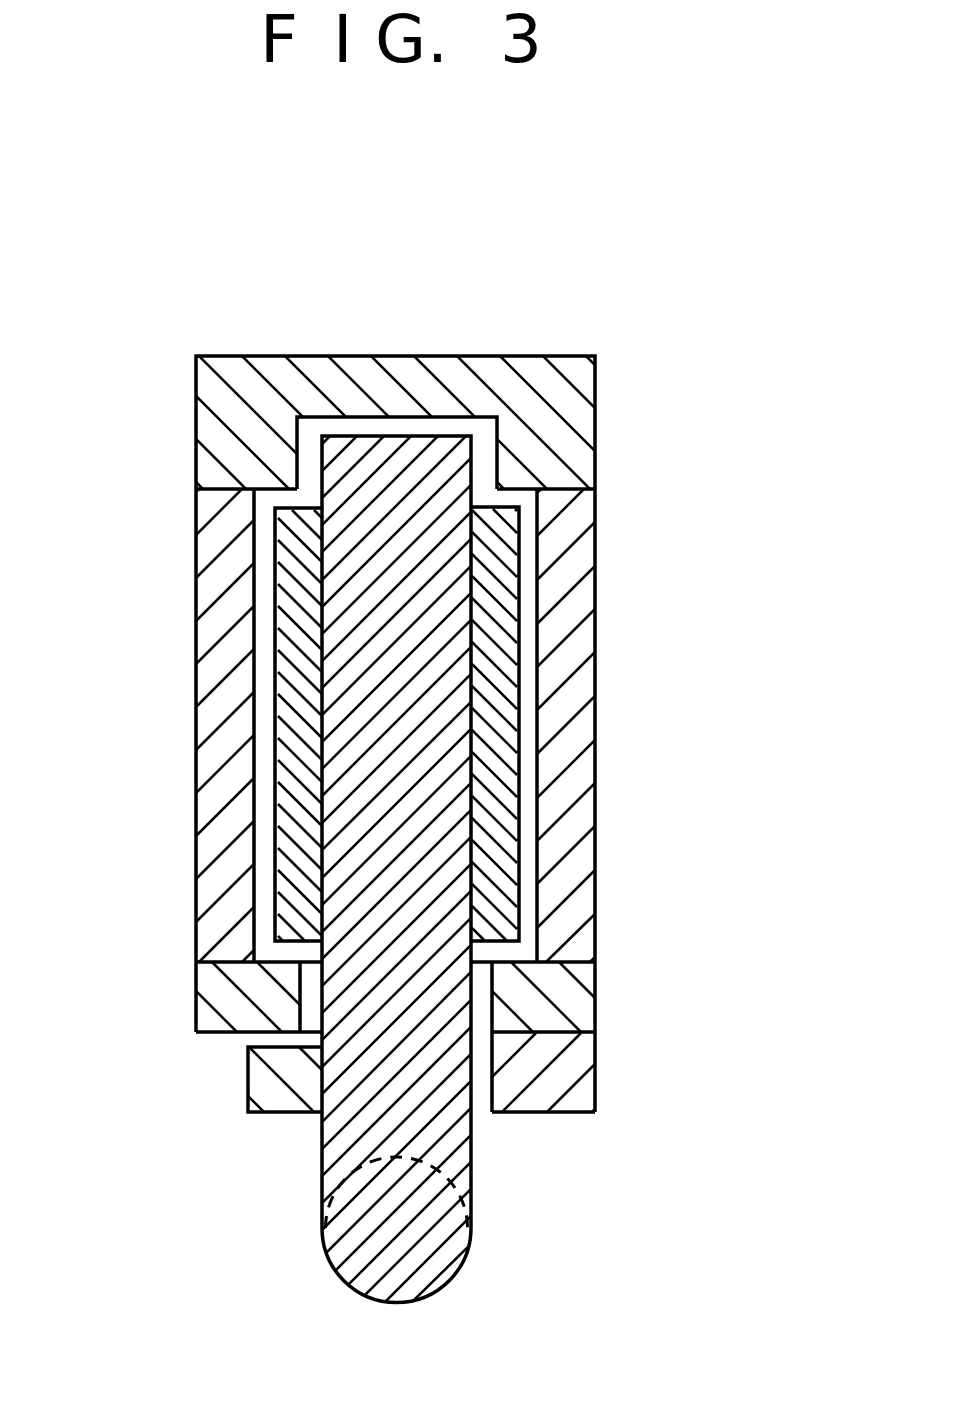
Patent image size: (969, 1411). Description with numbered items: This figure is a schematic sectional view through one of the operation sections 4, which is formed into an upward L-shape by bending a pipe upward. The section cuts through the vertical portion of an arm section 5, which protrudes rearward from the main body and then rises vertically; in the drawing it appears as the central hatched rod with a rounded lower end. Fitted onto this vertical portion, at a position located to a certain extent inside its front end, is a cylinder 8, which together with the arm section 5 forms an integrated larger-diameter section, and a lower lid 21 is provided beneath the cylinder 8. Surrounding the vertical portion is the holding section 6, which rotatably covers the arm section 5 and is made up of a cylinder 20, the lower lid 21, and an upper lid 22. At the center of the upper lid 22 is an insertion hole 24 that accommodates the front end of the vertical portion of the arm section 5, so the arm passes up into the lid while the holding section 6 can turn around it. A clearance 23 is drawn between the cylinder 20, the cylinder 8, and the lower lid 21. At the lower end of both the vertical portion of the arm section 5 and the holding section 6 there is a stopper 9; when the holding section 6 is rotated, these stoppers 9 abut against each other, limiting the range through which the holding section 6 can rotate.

The operation section 4 is at (700, 302).
The arm section 5 is at (340, 1160).
The holding section 6 is at (665, 823).
The cylinder 8 is at (297, 630).
The stopper 9 is at (263, 1087).
The cylinder 20 is at (230, 553).
The lower lid 21 is at (218, 1007).
The upper lid 22 is at (503, 382).
The clearance gap 23 is at (307, 983).
The insertion hole 24 is at (310, 430).